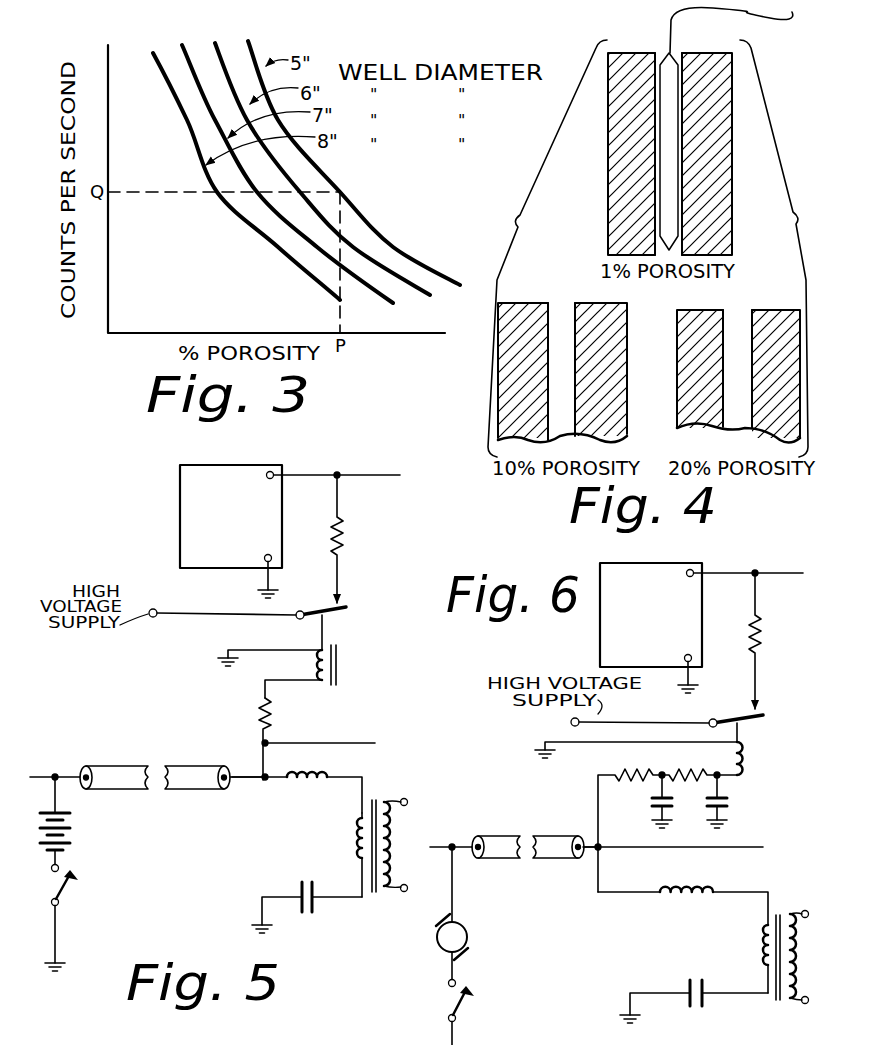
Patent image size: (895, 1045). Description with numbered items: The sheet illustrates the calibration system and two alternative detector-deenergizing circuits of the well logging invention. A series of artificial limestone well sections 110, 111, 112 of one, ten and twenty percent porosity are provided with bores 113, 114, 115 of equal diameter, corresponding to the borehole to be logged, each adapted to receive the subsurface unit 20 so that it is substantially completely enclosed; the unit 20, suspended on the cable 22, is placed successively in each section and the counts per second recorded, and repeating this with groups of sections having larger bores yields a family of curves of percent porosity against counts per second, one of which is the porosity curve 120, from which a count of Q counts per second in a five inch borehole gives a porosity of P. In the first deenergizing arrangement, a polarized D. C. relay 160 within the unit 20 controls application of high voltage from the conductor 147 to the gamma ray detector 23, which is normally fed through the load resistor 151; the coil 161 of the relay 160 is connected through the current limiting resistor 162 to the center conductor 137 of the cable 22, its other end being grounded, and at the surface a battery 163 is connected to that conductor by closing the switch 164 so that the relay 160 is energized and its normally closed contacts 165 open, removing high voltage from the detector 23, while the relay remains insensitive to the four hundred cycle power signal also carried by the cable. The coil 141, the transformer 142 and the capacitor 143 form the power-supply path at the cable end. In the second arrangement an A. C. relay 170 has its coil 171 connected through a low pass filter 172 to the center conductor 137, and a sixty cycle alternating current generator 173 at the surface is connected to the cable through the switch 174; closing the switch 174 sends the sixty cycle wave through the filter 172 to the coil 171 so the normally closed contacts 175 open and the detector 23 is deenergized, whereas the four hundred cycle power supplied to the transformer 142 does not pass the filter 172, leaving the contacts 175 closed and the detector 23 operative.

In FIG. 3, the porosity curve 120 is at (375, 222).
In FIG. 4, the bore 113 is at (661, 55).
In FIG. 4, the cable 22 is at (676, 36).
In FIG. 5, the cable 22 is at (190, 792).
In FIG. 6, the cable 22 is at (552, 846).
In FIG. 4, the subsurface unit 20 is at (668, 160).
In FIG. 4, the well section 110 is at (625, 208).
In FIG. 4, the bore 114 is at (565, 322).
In FIG. 4, the bore 115 is at (740, 312).
In FIG. 4, the well section 111 is at (615, 372).
In FIG. 4, the well section 112 is at (695, 393).
In FIG. 5, the gamma ray detector 23 is at (182, 474).
In FIG. 6, the gamma ray detector 23 is at (600, 653).
In FIG. 5, the load resistor 151 is at (348, 530).
In FIG. 6, the load resistor 151 is at (760, 636).
In FIG. 5, the contacts 165 is at (348, 606).
In FIG. 5, the D. C. relay 160 is at (347, 632).
In FIG. 5, the conductor 147 is at (195, 614).
In FIG. 6, the conductor 147 is at (622, 716).
In FIG. 5, the coil 161 is at (313, 664).
In FIG. 5, the current limiting resistor 162 is at (258, 716).
In FIG. 5, the center conductor 137 is at (246, 787).
In FIG. 6, the center conductor 137 is at (588, 852).
In FIG. 5, the inductance coil 141 is at (310, 787).
In FIG. 6, the inductance coil 141 is at (697, 897).
In FIG. 5, the transformer 142 is at (357, 846).
In FIG. 6, the transformer 142 is at (760, 950).
In FIG. 5, the capacitor 143 is at (305, 913).
In FIG. 6, the capacitor 143 is at (700, 980).
In FIG. 5, the battery 163 is at (70, 835).
In FIG. 5, the switch 164 is at (65, 893).
In FIG. 6, the contacts 175 is at (764, 712).
In FIG. 6, the A. C. relay 170 is at (767, 733).
In FIG. 6, the coil 171 is at (732, 762).
In FIG. 6, the low pass filter 172 is at (662, 830).
In FIG. 6, the alternating current generator 173 is at (465, 930).
In FIG. 6, the switch 174 is at (462, 1005).